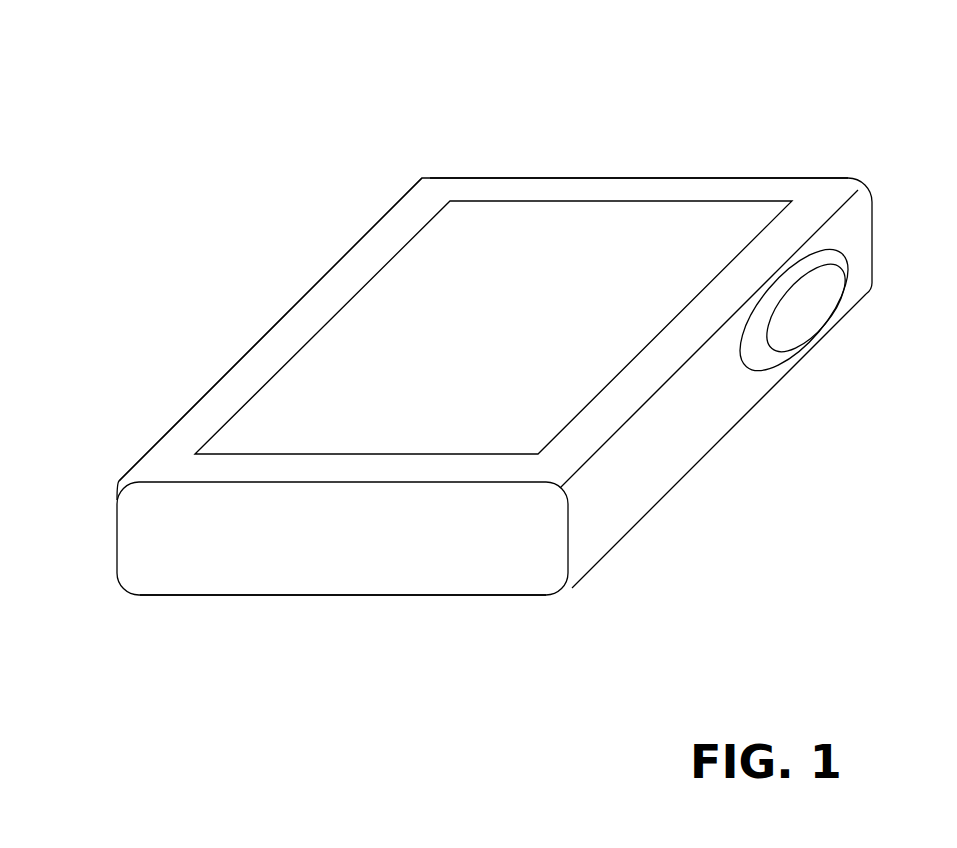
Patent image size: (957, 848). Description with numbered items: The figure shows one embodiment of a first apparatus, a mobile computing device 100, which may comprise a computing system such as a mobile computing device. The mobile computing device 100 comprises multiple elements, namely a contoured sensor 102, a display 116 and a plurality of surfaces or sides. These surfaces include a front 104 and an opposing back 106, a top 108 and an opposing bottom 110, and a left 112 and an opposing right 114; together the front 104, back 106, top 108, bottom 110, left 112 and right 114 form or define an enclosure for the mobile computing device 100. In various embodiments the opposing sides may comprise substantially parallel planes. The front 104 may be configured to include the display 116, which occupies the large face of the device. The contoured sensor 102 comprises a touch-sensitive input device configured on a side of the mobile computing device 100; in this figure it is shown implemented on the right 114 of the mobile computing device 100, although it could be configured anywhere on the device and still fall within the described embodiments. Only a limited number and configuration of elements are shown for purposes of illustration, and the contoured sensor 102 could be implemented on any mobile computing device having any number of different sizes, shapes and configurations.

The mobile computing device 100 is at (189, 53).
The contoured sensor 102 is at (805, 313).
The front 104 is at (412, 210).
The back 106 is at (460, 598).
The top 108 is at (750, 178).
The bottom 110 is at (215, 557).
The left 112 is at (160, 437).
The right 114 is at (663, 463).
The display 116 is at (468, 225).